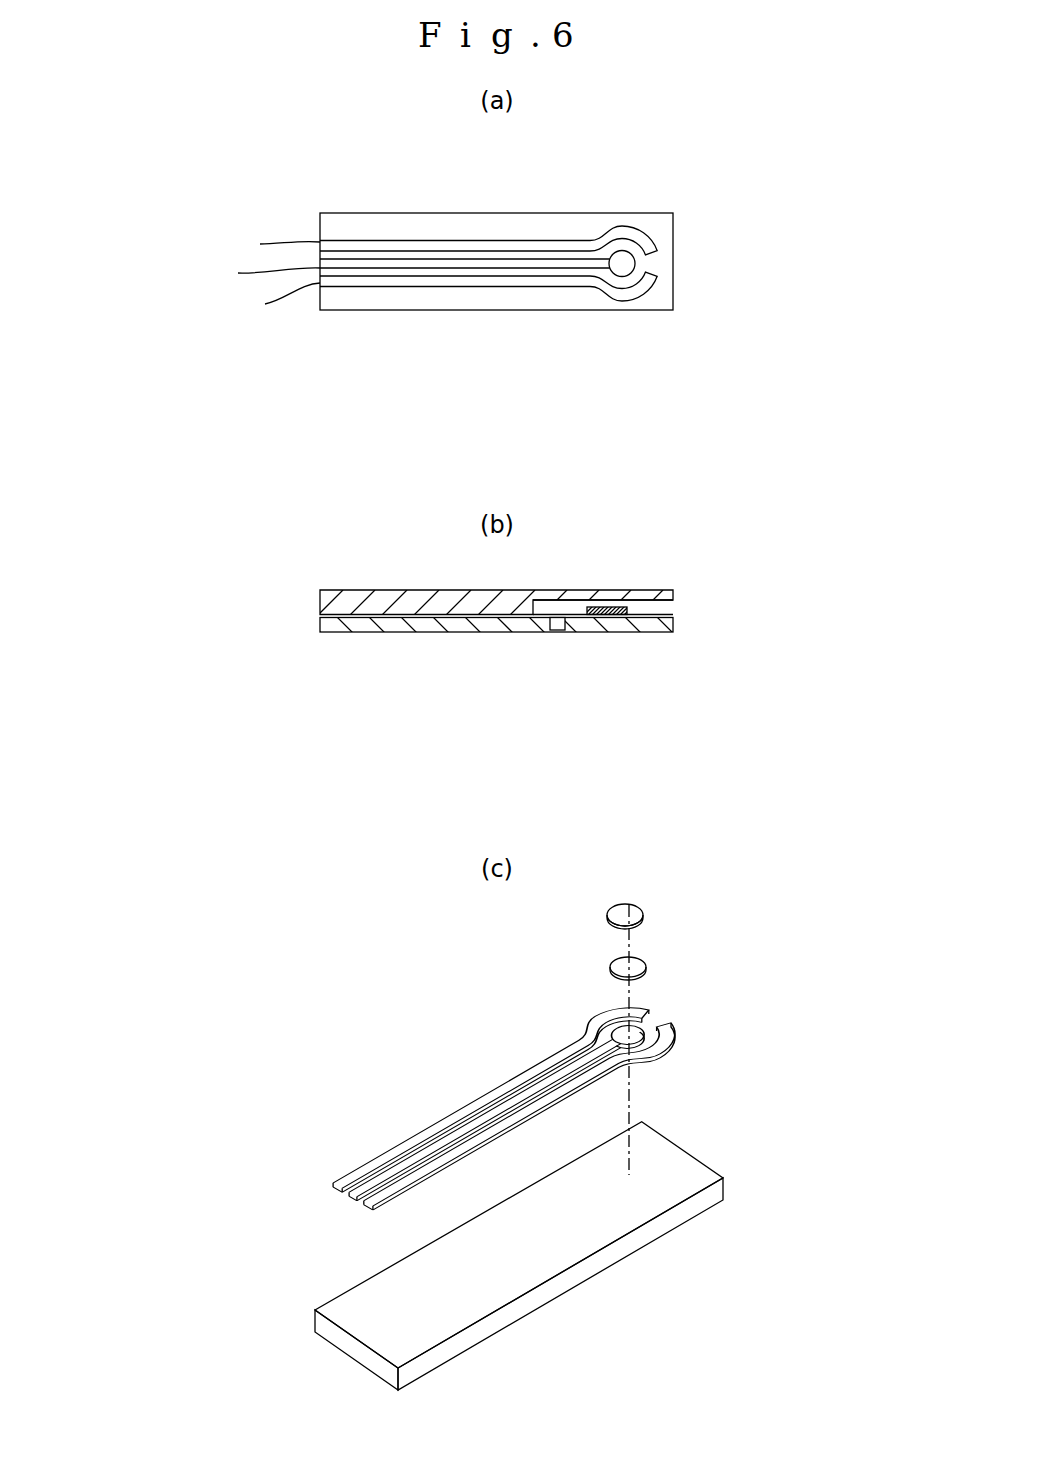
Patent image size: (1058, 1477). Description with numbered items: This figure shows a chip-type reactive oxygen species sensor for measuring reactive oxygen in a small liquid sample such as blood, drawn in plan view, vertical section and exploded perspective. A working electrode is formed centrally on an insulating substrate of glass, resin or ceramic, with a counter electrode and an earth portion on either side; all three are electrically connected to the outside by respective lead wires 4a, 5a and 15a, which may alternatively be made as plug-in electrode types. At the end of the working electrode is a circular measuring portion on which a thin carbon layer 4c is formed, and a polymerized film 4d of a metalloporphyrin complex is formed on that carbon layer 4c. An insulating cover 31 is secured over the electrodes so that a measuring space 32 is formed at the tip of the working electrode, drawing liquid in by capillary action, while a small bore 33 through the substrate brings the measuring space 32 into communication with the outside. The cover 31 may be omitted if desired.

The lead wire 4a is at (245, 277).
The carbon layer 4c is at (633, 962).
The polymerized film of a metalloporphyrin complex 4d is at (632, 914).
The lead wire 5a is at (277, 303).
The lead wire 15a is at (270, 241).
The insulating cover 31 is at (427, 605).
The measuring space 32 is at (647, 608).
The small bore 33 is at (557, 627).